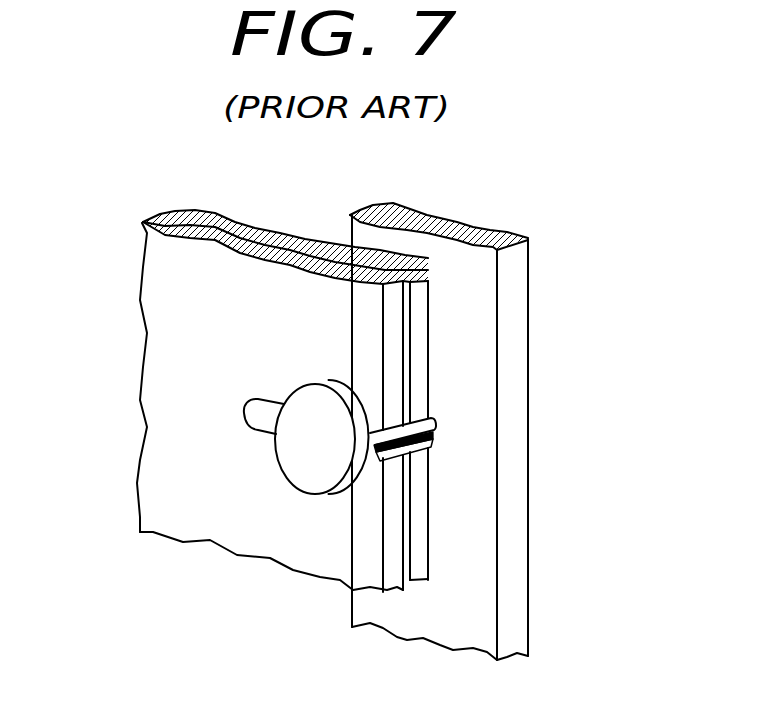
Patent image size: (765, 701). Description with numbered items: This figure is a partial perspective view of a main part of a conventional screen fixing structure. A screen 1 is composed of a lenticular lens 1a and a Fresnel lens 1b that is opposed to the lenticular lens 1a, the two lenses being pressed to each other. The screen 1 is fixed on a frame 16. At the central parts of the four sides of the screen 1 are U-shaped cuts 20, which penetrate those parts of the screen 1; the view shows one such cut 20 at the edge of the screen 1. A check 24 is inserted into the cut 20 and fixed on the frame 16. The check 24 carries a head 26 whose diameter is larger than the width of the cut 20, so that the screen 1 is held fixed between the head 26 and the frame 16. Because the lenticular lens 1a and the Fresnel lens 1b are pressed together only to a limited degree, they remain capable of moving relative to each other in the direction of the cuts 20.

The screen 1 is at (263, 379).
The lenticular lens 1a is at (185, 212).
The Fresnel lens 1b is at (177, 220).
The frame 16 is at (517, 343).
The cuts 20 is at (410, 447).
The checks 24 is at (375, 431).
The heads 26 is at (305, 397).